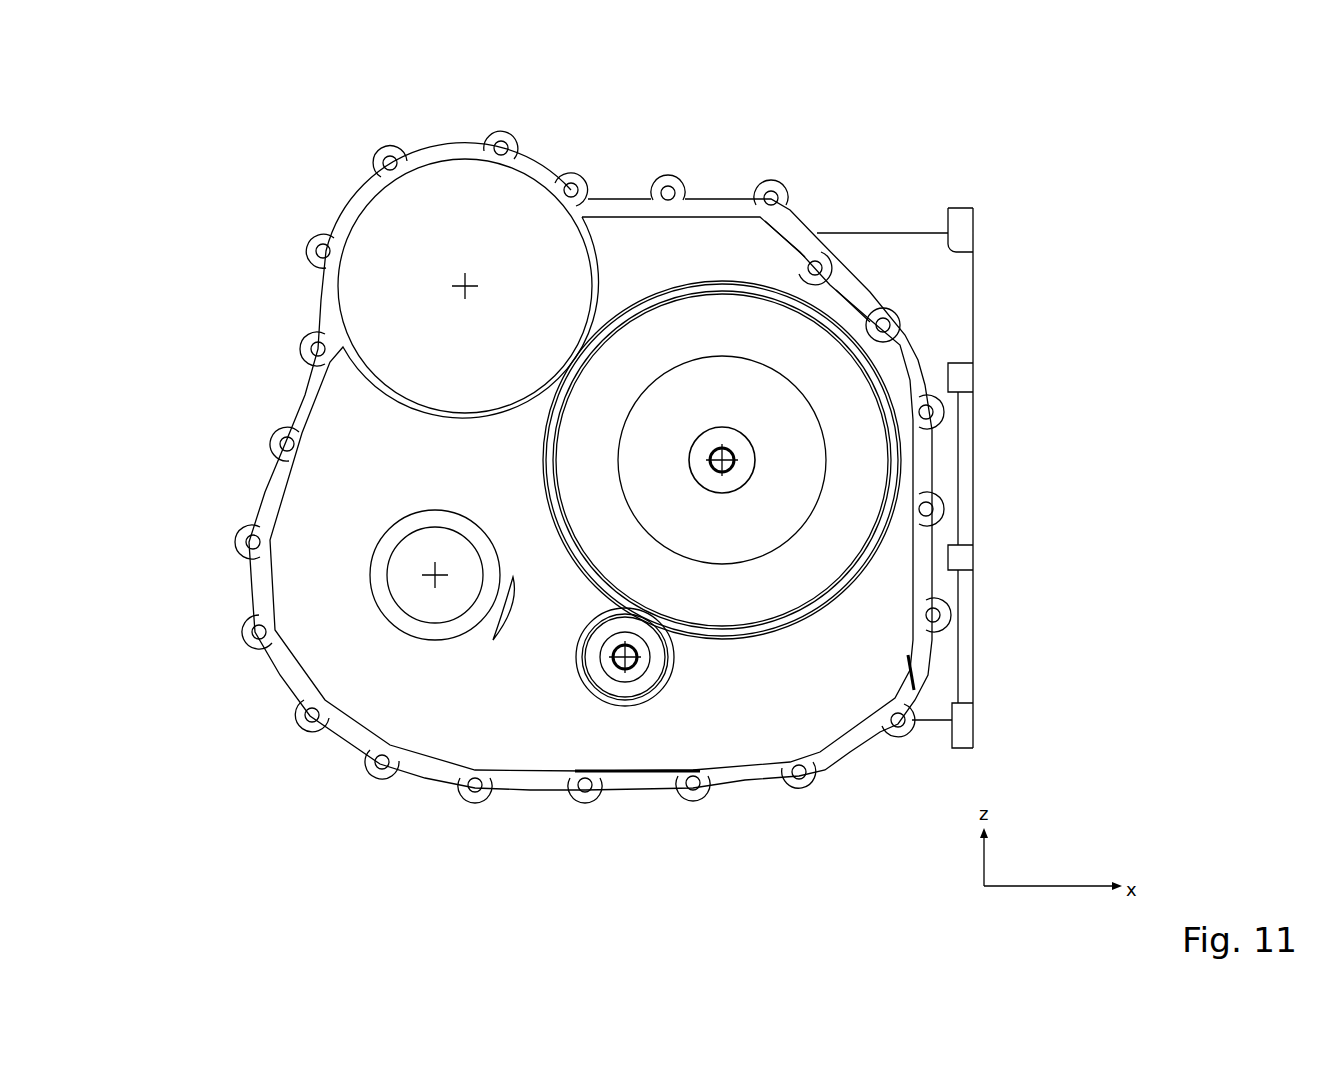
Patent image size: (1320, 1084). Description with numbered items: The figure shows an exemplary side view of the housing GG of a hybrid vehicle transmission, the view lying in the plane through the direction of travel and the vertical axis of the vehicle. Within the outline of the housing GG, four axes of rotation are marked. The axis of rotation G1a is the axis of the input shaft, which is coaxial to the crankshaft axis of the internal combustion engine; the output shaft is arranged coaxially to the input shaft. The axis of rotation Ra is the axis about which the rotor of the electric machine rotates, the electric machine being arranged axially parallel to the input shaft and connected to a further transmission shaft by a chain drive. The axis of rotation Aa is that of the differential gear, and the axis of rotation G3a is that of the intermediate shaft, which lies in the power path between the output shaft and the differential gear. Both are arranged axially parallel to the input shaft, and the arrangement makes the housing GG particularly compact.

The housing GG is at (717, 198).
The axis of rotation of the rotor Ra is at (463, 287).
The axis of rotation of the differential gear Aa is at (435, 575).
The axis of rotation of the input shaft G1a is at (737, 472).
The axis of rotation of the intermediate shaft G3a is at (630, 670).